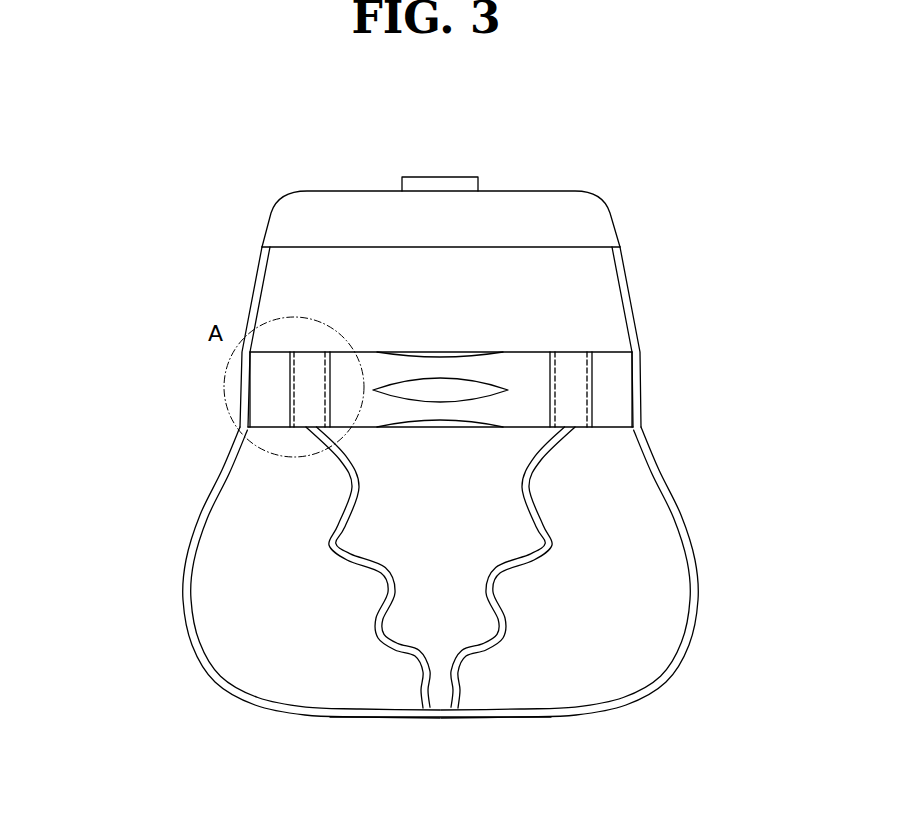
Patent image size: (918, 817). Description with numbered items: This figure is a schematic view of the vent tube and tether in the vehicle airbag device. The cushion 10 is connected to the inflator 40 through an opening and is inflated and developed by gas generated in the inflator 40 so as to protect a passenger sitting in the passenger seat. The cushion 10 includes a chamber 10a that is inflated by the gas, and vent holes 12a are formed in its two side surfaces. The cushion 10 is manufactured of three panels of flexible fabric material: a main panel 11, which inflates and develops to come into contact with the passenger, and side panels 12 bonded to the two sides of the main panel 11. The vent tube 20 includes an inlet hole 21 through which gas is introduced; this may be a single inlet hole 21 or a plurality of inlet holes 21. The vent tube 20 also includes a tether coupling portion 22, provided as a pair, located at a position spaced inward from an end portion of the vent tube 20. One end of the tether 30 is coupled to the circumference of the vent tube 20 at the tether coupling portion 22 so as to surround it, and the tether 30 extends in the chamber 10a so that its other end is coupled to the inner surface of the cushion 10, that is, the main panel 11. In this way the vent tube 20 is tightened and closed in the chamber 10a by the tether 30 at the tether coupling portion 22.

The cushion 10 is at (160, 562).
The chamber 10a is at (620, 570).
The main panel 11 is at (478, 716).
The side panel 12 is at (250, 282).
The vent hole 12a is at (245, 380).
The vent tube 20 is at (405, 352).
The inlet hole 21 is at (458, 386).
The tether coupling portion 22 is at (305, 404).
The tether 30 is at (385, 661).
The inflator 40 is at (592, 220).